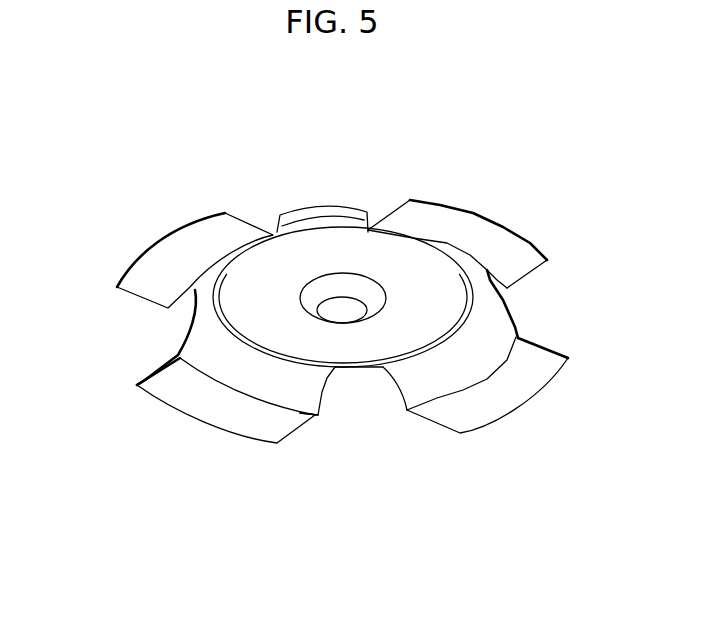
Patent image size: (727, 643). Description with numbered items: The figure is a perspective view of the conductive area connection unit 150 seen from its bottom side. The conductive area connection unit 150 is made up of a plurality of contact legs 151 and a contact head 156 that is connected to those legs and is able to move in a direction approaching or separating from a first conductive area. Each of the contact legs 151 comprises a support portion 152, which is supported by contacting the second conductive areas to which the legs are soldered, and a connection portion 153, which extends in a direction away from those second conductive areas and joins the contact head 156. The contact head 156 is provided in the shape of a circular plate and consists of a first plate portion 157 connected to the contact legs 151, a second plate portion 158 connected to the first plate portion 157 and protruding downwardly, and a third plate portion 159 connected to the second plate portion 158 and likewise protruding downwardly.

The conductive area connection unit 150 is at (77, 97).
The contact legs 151 is at (227, 471).
The support portion 152 is at (226, 449).
The connection portion 153 is at (291, 459).
The contact head 156 is at (523, 563).
The first plate portion 157 is at (503, 405).
The second plate portion 158 is at (379, 383).
The third plate portion 159 is at (395, 406).